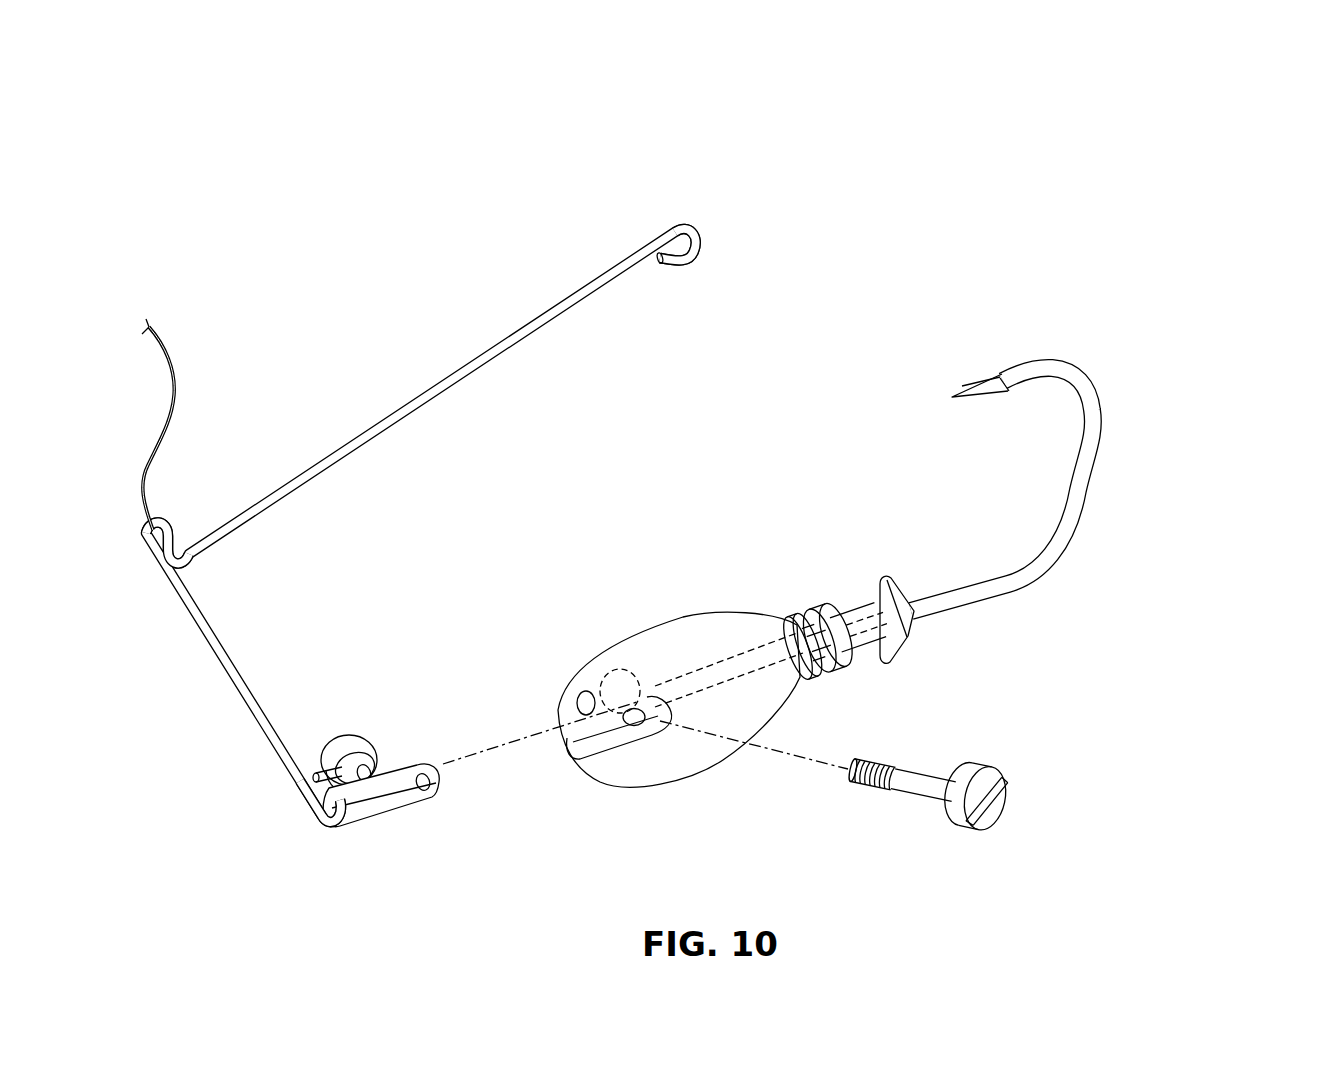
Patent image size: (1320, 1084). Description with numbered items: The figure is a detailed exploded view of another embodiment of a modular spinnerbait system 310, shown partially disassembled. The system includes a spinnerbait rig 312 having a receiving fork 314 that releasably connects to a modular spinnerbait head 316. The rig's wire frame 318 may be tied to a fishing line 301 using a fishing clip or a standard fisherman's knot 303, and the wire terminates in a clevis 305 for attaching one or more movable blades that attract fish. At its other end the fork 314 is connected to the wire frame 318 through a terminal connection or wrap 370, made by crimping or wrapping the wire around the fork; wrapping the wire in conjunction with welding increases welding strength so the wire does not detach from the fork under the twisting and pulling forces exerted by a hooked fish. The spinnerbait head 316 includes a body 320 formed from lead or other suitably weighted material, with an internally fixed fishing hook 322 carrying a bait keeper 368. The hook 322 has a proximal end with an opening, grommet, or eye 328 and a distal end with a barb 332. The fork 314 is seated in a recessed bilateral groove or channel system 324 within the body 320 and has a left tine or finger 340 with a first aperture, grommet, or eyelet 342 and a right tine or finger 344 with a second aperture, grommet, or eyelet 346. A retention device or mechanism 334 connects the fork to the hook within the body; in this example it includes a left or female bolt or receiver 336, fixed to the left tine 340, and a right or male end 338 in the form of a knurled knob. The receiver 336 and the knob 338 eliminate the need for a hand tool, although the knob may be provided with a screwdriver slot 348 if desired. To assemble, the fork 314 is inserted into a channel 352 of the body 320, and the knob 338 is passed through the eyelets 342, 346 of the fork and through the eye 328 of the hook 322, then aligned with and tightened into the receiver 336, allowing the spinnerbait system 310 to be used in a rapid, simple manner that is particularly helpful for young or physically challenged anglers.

The modular spinnerbait system 310 is at (1041, 141).
The clevis 305 is at (681, 226).
The wire frame 318 is at (389, 420).
The fishing line 301 is at (178, 397).
The fisherman's knot 303 is at (154, 521).
The spinnerbait rig 312 is at (790, 388).
The modular spinnerbait head 316 is at (773, 580).
The body 320 is at (645, 671).
The fishing hook 322 is at (1087, 487).
The barb 332 is at (957, 399).
The bait keeper 368 is at (845, 570).
The eye 328 is at (622, 707).
The channel system 324 is at (583, 752).
The channel 352 is at (654, 728).
The retention device 334 is at (955, 797).
The knob 338 is at (877, 797).
The screwdriver slot 348 is at (1005, 797).
The receiving fork 314 is at (404, 772).
The right tine 344 is at (411, 834).
The second eyelet 346 is at (435, 788).
The receiver 336 is at (369, 715).
The first eyelet 342 is at (371, 770).
The left tine 340 is at (338, 762).
The terminal connection 370 is at (324, 813).